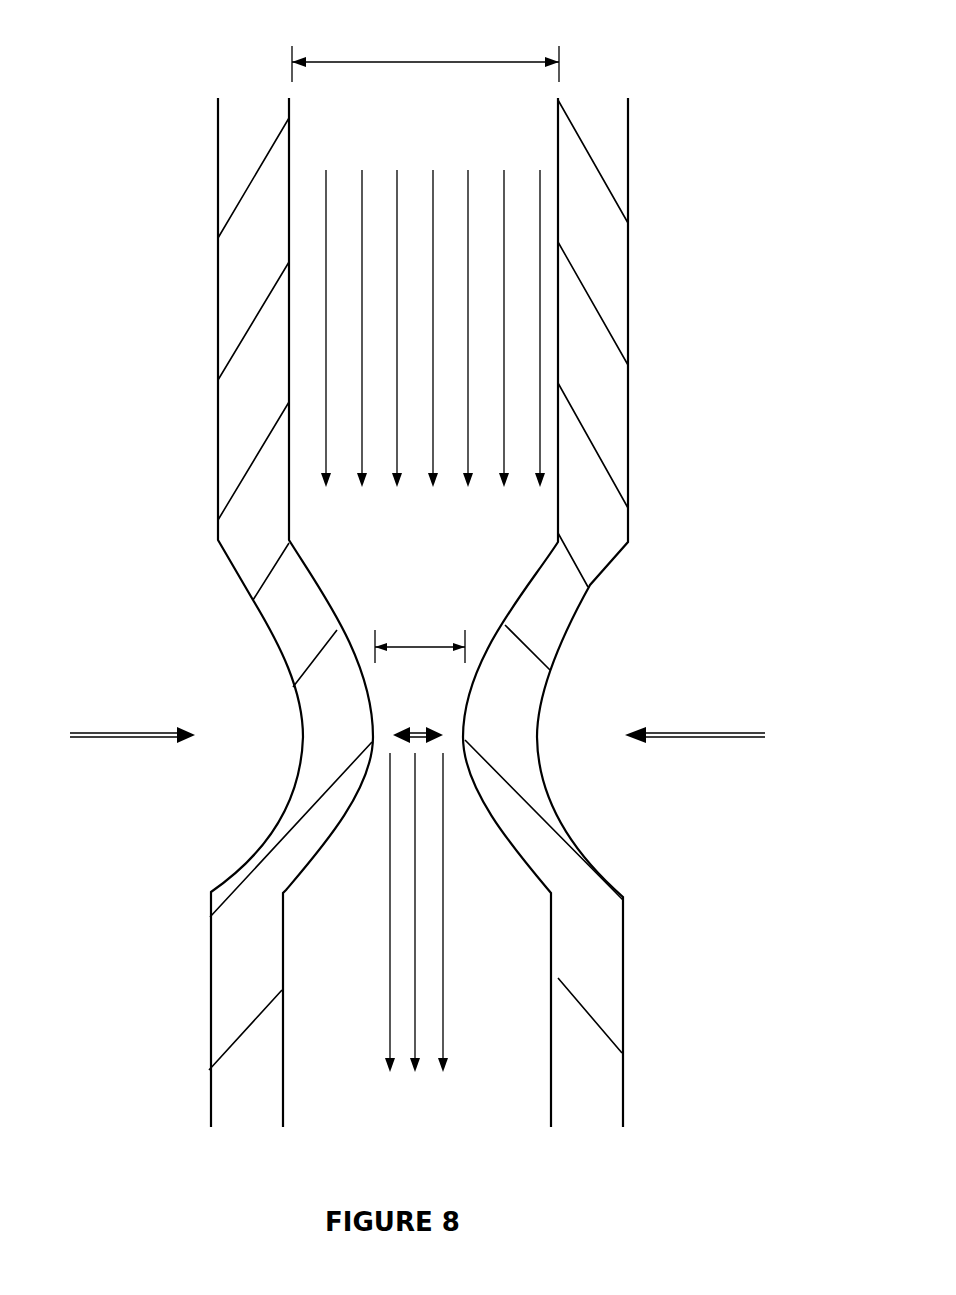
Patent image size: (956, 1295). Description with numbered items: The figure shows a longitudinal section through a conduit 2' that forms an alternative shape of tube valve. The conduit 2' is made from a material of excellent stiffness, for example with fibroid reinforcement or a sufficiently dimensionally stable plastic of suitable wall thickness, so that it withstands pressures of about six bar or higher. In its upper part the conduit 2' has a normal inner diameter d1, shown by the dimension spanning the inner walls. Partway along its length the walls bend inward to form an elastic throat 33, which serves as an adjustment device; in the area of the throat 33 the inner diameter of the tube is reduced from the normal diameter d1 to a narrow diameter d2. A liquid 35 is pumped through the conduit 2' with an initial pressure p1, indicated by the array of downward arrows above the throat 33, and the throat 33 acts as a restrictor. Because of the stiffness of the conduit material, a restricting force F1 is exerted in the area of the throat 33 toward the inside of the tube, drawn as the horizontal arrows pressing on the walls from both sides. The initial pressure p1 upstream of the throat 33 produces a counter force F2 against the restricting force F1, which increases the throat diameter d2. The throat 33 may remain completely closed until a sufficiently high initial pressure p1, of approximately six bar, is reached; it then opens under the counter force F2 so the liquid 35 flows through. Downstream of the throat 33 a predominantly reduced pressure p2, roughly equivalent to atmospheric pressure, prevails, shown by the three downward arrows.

The conduit 2' is at (521, 612).
The elastic throat 33 is at (252, 678).
The liquid 35 is at (432, 351).
The normal diameter d1 is at (449, 62).
The narrow diameter d2 is at (425, 648).
The initial pressure p1 is at (364, 165).
The reduced pressure p2 is at (464, 938).
The restricting force F1 is at (132, 735).
The counter force F2 is at (417, 742).